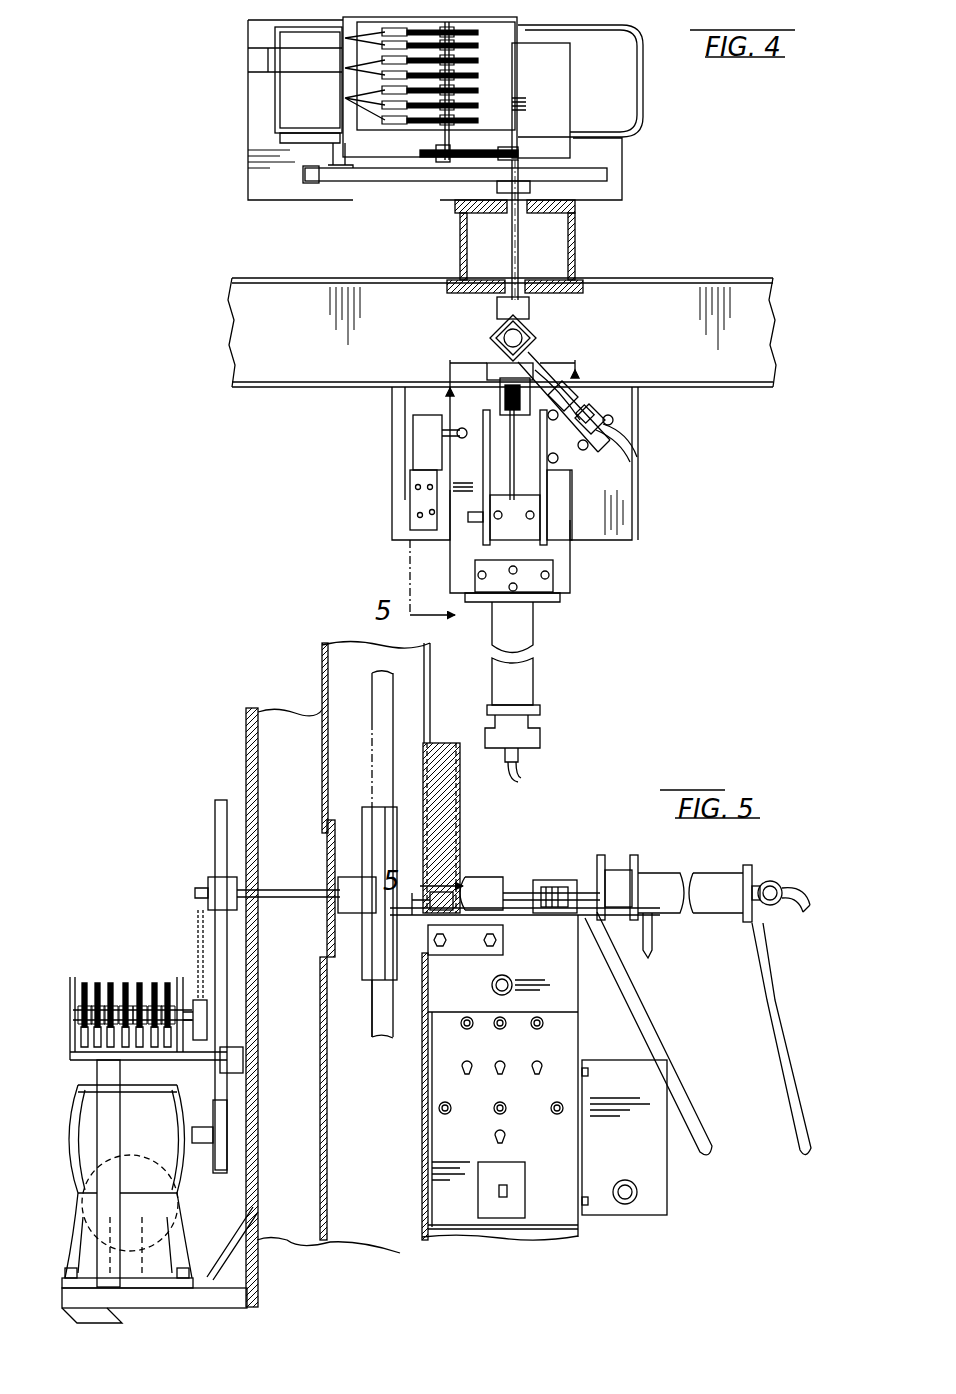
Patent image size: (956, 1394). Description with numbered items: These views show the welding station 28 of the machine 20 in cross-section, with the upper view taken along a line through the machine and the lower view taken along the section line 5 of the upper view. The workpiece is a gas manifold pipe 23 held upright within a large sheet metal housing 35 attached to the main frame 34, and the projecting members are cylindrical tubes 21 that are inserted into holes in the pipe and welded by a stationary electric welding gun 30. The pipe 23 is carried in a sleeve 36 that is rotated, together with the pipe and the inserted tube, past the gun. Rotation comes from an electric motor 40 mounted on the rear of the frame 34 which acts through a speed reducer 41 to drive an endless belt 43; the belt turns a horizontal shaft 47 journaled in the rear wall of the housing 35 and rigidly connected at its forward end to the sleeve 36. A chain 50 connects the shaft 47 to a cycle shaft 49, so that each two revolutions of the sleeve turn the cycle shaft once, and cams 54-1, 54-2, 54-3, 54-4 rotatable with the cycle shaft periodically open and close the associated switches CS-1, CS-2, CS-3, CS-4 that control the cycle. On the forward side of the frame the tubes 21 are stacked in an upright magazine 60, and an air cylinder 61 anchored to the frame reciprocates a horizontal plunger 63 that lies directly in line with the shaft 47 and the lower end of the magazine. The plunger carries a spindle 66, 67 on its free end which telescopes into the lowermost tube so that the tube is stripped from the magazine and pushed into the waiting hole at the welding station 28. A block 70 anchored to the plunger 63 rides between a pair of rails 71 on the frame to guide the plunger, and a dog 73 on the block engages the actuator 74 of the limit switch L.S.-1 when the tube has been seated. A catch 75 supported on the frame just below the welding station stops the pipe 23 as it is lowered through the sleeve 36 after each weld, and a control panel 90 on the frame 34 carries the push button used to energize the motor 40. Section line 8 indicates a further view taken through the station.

In FIG. 4, the section line 5— 5 is at (305, 208).
In FIG. 4, the section line 8- 8 is at (512, 363).
In FIG. 4, the machine 20 is at (645, 408).
In FIG. 5, the machine 20 is at (507, 862).
In FIG. 4, the projecting rod-like members 21 is at (488, 323).
In FIG. 5, the projecting rod-like members 21 is at (443, 745).
In FIG. 4, the workpiece 23 is at (537, 327).
In FIG. 5, the workpiece 23 is at (377, 692).
In FIG. 4, the welding station 28 is at (420, 352).
In FIG. 5, the welding station 28 is at (408, 868).
In FIG. 4, the electric welding gun 30 is at (540, 345).
In FIG. 5, the electric welding gun 30 is at (412, 890).
In FIG. 4, the frame 34 is at (640, 474).
In FIG. 5, the frame 34 is at (252, 1218).
In FIG. 4, the sheet metal housing 35 is at (645, 278).
In FIG. 5, the sheet metal housing 35 is at (319, 658).
In FIG. 4, the sleeve 36 is at (492, 323).
In FIG. 5, the sleeve 36 is at (370, 927).
In FIG. 4, the electric motor 40 is at (637, 108).
In FIG. 5, the electric motor 40 is at (77, 1207).
In FIG. 4, the speed reducer 41 is at (303, 93).
In FIG. 5, the speed reducer 41 is at (73, 1100).
In FIG. 4, the endless belt 43 is at (377, 170).
In FIG. 5, the endless belt 43 is at (222, 1042).
In FIG. 4, the horizontal shaft 47 is at (518, 250).
In FIG. 5, the horizontal shaft 47 is at (285, 893).
In FIG. 4, the cycle shaft 49 is at (440, 140).
In FIG. 5, the cycle shaft 49 is at (200, 1003).
In FIG. 4, the chain 50 is at (505, 150).
In FIG. 5, the chain 50 is at (198, 915).
In FIG. 5, the cam 54-1 is at (168, 985).
In FIG. 4, the cam 54-2 is at (477, 105).
In FIG. 4, the cam 54-3 is at (477, 90).
In FIG. 5, the cam 54-4 is at (120, 985).
In FIG. 5, the switch CS-1 is at (158, 985).
In FIG. 4, the switch CS-2 is at (390, 107).
In FIG. 4, the switch CS-3 is at (393, 90).
In FIG. 5, the switch CS-4 is at (112, 985).
In FIG. 4, the limit switch L.S.-1 is at (413, 445).
In FIG. 4, the magazine 60 is at (583, 387).
In FIG. 5, the magazine 60 is at (460, 780).
In FIG. 4, the air cylinder 61 is at (523, 667).
In FIG. 5, the air cylinder 61 is at (720, 915).
In FIG. 4, the plunger 63 is at (545, 480).
In FIG. 5, the plunger 63 is at (605, 870).
In FIG. 4, the spindle 66 is at (515, 455).
In FIG. 5, the spindle 66 is at (513, 892).
In FIG. 4, the spindle 67 is at (588, 418).
In FIG. 4, the block 70 is at (560, 577).
In FIG. 5, the block 70 is at (572, 888).
In FIG. 4, the rails 71 is at (485, 535).
In FIG. 4, the dog 73 is at (473, 513).
In FIG. 5, the dog 73 is at (560, 907).
In FIG. 4, the actuator 74 is at (447, 445).
In FIG. 4, the catch 75 is at (487, 383).
In FIG. 5, the catch 75 is at (410, 948).
In FIG. 5, the control panel 90 is at (468, 1207).